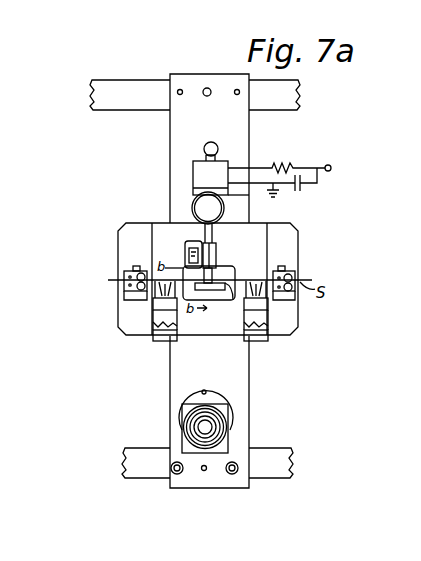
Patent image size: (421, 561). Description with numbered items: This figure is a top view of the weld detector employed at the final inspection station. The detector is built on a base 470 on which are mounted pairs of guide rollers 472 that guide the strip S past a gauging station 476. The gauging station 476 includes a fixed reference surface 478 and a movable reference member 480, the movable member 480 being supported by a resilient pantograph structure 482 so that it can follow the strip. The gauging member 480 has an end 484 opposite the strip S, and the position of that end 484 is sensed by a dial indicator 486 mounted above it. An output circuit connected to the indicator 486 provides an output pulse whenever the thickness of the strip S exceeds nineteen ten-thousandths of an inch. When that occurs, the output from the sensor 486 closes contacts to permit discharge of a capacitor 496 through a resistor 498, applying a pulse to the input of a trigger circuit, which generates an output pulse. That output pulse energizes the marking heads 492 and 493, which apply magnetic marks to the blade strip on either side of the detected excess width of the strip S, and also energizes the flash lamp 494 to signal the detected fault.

The base 470 is at (126, 332).
The guide rollers 472 is at (136, 267).
The gauging station 476 is at (177, 314).
The fixed reference surface 478 is at (223, 304).
The movable reference member 480 is at (228, 267).
The resilient pantograph structure 482 is at (190, 246).
The end 484 is at (217, 251).
The dial indicator 486 is at (193, 195).
The marking head 492 is at (152, 302).
The marking head 493 is at (268, 303).
The flash lamp 494 is at (228, 428).
The capacitor 496 is at (302, 187).
The resistor 498 is at (294, 165).